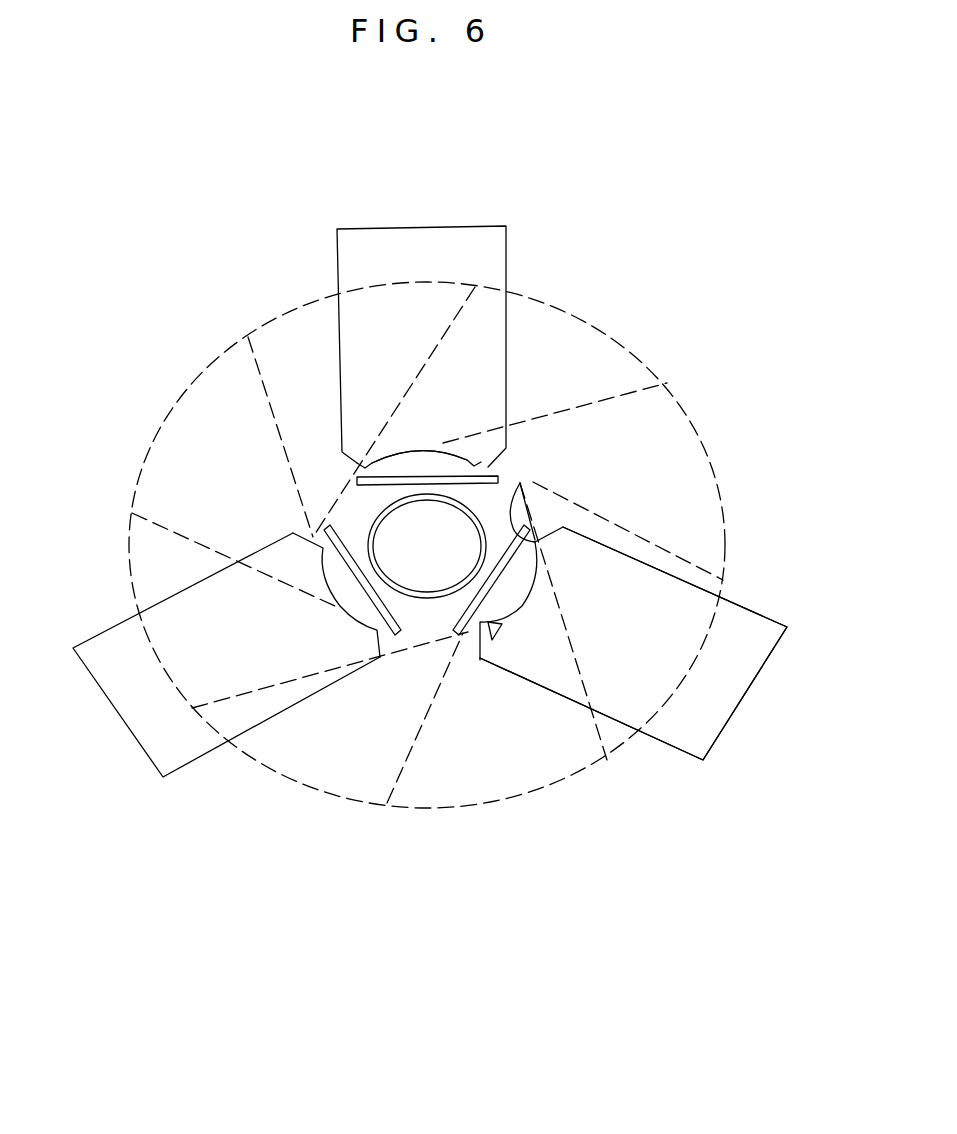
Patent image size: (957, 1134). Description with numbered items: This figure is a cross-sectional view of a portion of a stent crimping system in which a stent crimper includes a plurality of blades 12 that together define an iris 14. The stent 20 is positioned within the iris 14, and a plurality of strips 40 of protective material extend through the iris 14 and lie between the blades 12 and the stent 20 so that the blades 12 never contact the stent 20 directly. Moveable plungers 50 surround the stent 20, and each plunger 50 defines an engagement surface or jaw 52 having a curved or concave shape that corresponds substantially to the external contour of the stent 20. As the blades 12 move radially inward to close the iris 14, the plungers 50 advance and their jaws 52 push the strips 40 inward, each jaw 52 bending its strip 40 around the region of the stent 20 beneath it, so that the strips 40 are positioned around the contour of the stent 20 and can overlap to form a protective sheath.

The blades 12 is at (333, 772).
The iris 14 is at (423, 625).
The stent 20 is at (333, 515).
The strips 40 is at (530, 490).
The plungers 50 is at (492, 252).
The jaw 52 is at (420, 447).